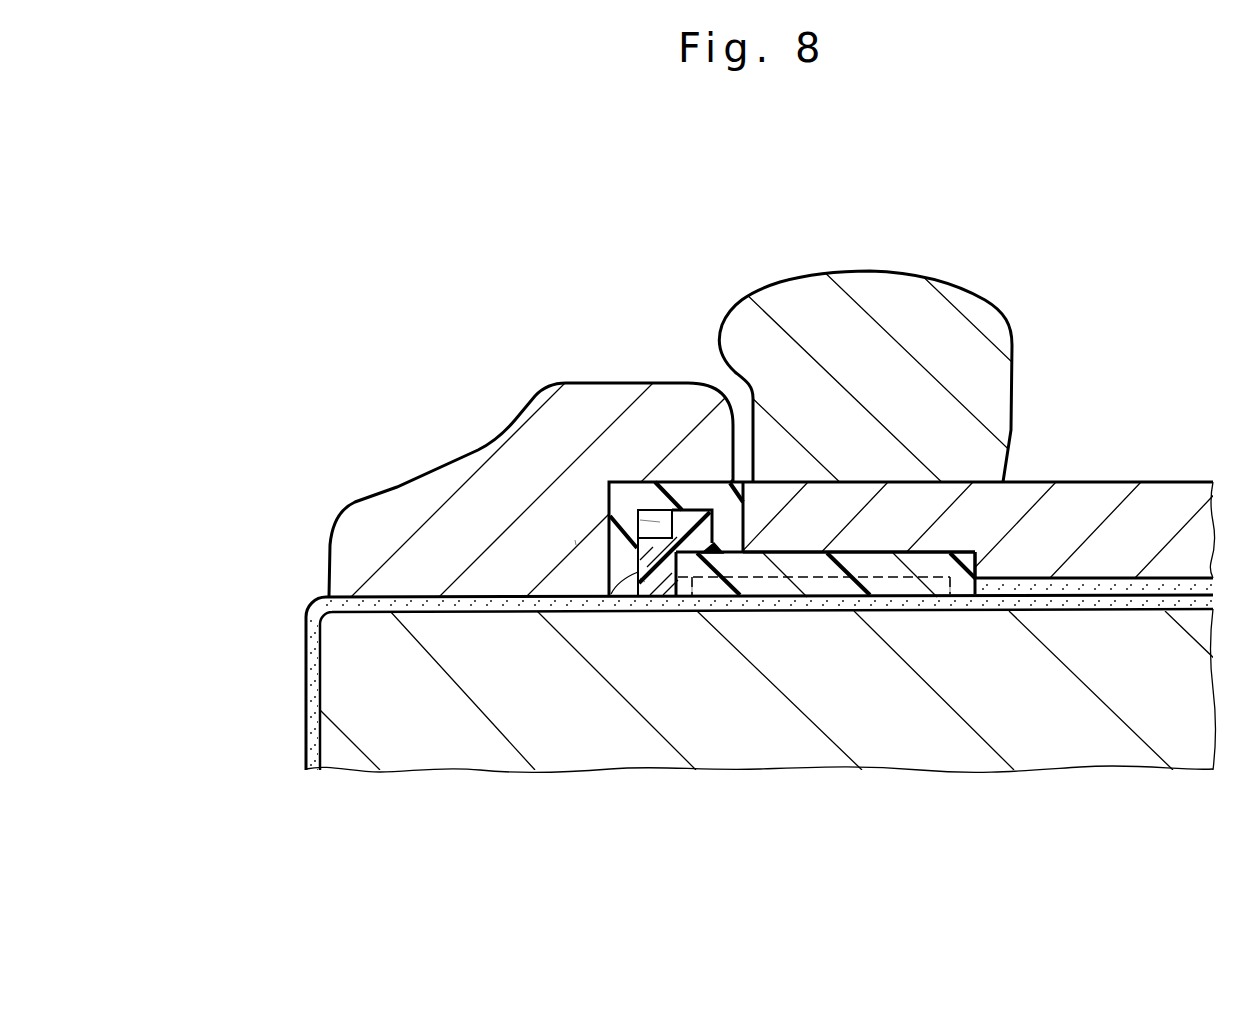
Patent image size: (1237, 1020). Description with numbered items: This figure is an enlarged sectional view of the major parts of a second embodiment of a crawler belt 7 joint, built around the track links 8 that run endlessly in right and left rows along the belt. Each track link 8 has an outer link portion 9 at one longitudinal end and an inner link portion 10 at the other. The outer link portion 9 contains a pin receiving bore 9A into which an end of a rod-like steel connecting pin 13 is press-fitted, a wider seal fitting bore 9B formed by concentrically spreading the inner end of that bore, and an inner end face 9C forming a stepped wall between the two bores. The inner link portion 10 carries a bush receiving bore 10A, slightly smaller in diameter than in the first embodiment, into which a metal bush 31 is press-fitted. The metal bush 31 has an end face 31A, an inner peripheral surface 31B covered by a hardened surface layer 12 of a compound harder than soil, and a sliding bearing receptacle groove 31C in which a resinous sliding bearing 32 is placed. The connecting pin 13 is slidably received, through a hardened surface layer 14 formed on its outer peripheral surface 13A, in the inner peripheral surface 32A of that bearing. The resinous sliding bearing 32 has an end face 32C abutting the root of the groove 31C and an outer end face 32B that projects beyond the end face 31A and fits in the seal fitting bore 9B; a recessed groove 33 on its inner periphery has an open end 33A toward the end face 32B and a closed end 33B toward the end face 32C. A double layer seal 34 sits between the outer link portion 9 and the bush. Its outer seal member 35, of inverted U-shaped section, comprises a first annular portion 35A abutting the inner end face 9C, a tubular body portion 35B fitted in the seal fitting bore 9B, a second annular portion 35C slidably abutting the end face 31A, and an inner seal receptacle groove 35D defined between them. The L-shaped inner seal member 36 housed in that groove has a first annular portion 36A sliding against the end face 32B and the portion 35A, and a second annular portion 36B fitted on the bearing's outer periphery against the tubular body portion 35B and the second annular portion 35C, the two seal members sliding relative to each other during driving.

The crawler belt 7 is at (430, 440).
The track links 8 is at (360, 492).
The outer link portion 9 is at (403, 503).
The pin receiving bore 9A is at (413, 600).
The seal fitting bore 9B is at (607, 497).
The inner end face 9C is at (575, 540).
The inner link portion 10 is at (903, 302).
The bush receiving bore 10A is at (968, 484).
The hardened surface layer on the side of bush 12 is at (1070, 585).
The connecting pin 13 is at (441, 742).
The outer peripheral surface of connecting pin 13A is at (1122, 603).
The hardened surface layer on the side of connecting pin 14 is at (1090, 603).
The metal bush 31 is at (1142, 502).
The end face of metal bush 31A is at (742, 480).
The inner peripheral surface of metal bush 31B is at (1165, 580).
The sliding bearing receptacle groove 31C is at (933, 556).
The resinous sliding bearing 32 is at (787, 563).
The inner peripheral surface of resinous sliding bearing 32A is at (882, 568).
The end face of resinous sliding bearing 32B is at (672, 580).
The end face of resinous sliding bearing 32C is at (975, 568).
The recessed groove 33 is at (840, 600).
The open end of recessed groove 33A is at (692, 600).
The closed end of recessed groove 33B is at (943, 585).
The double layer seal 34 is at (680, 465).
The outer seal member 35 is at (700, 490).
The first annular portion of outer seal member 35A is at (607, 522).
The tubular body portion of outer seal member 35B is at (657, 512).
The second annular portion of outer seal member 35C is at (748, 535).
The inner seal receptacle groove 35D is at (655, 522).
The inner seal member 36 is at (615, 566).
The first annular portion of inner seal member 36A is at (640, 578).
The second annular portion of inner seal member 36B is at (703, 578).